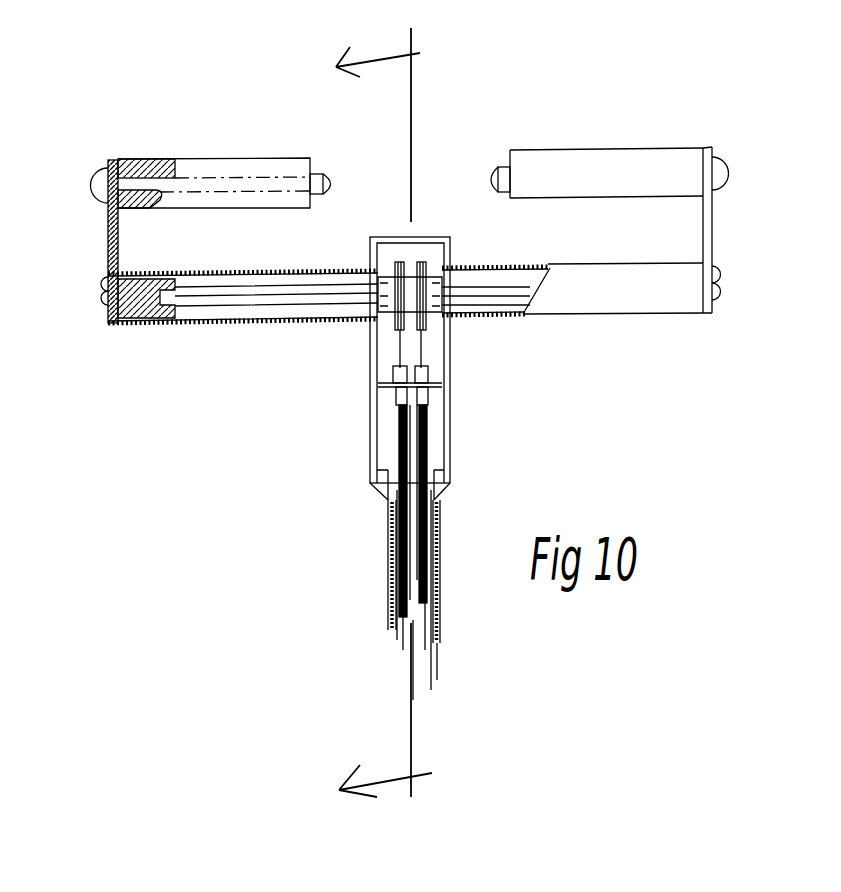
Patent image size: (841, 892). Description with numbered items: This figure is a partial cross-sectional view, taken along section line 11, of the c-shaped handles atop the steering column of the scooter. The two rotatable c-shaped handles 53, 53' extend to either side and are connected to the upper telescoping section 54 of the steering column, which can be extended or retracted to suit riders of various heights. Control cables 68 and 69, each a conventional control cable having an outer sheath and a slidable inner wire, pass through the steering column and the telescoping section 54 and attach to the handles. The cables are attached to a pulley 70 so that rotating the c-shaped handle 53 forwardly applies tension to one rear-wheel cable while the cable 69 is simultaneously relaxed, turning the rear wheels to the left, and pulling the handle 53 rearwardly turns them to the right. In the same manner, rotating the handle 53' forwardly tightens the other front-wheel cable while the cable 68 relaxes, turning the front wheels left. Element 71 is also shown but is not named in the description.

The section line 11 is at (404, 403).
The c-shaped handle 53 is at (235, 212).
The c-shaped handle 53' is at (634, 196).
The left connector pin 71 is at (400, 280).
The pulley 70 is at (423, 262).
The control cable 69 is at (397, 435).
The control cable 68 is at (430, 440).
The upper telescoping section 54 is at (375, 590).